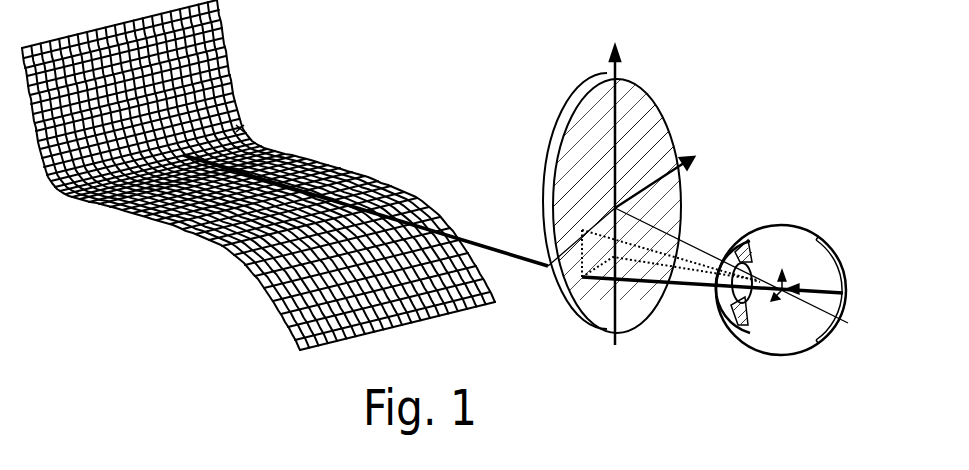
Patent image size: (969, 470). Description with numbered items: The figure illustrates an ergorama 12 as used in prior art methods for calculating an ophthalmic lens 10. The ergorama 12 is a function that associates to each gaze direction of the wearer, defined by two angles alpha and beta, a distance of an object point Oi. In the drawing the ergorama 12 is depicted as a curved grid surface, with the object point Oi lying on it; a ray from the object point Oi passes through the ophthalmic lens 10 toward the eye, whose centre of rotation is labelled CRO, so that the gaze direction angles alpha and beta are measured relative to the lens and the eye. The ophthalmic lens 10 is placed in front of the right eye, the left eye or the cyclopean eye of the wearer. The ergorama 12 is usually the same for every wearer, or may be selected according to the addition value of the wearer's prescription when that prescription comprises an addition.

The ergorama 12 is at (207, 78).
The ophthalmic lens 10 is at (647, 122).
The object point Oi is at (238, 130).
The centre of rotation of the eye CRO is at (781, 290).